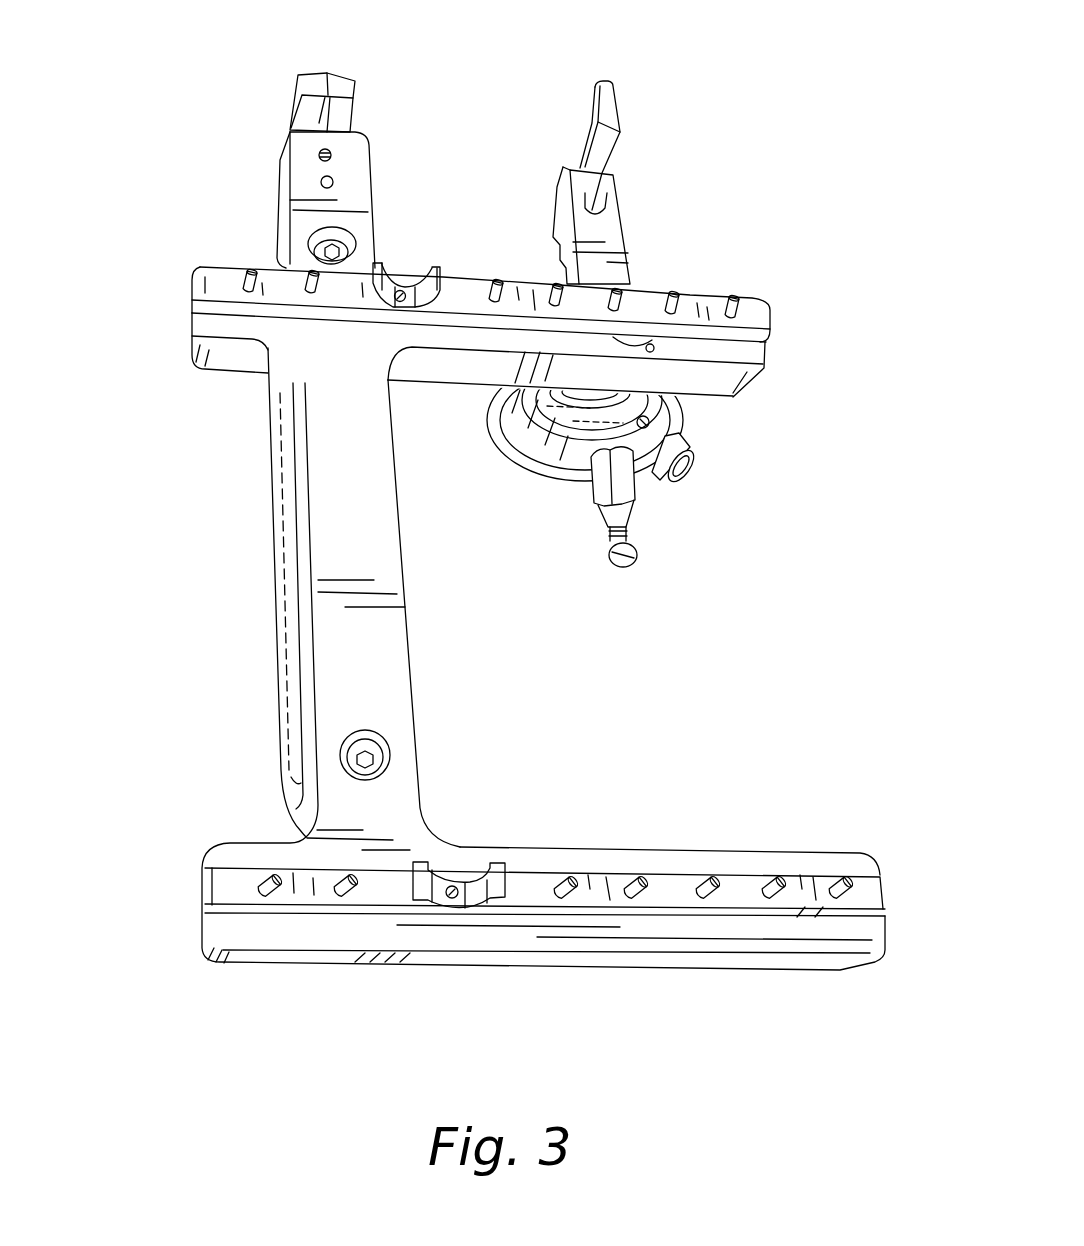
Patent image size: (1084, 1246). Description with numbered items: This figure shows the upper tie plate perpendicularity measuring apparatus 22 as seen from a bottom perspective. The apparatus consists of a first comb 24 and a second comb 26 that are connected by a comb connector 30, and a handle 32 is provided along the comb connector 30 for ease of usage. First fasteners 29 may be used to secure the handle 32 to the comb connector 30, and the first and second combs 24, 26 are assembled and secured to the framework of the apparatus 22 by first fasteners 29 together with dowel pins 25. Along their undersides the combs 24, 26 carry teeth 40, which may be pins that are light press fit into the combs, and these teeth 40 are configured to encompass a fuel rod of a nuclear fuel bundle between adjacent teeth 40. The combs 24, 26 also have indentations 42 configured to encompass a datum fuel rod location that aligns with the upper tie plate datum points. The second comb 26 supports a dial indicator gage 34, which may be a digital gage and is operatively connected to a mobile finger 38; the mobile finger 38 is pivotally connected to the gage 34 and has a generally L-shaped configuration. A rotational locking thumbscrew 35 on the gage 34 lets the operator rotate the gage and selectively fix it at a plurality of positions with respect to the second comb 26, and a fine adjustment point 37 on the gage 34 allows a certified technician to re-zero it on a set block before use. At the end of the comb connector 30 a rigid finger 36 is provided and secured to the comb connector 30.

The upper tie plate perpendicularity measuring apparatus 22 is at (148, 452).
The first comb 24 is at (853, 937).
The dowel pins 25 is at (400, 290).
The second comb 26 is at (747, 352).
The first fasteners 29 is at (325, 252).
The comb connector 30 is at (368, 690).
The handle 32 is at (299, 712).
The dial indicator gage 34 is at (518, 467).
The rotational locking thumbscrew 35 is at (690, 466).
The rigid finger 36 is at (333, 80).
The fine adjustment point 37 is at (633, 547).
The mobile finger 38 is at (612, 115).
The teeth 40 is at (678, 292).
The indentations 42 is at (415, 292).